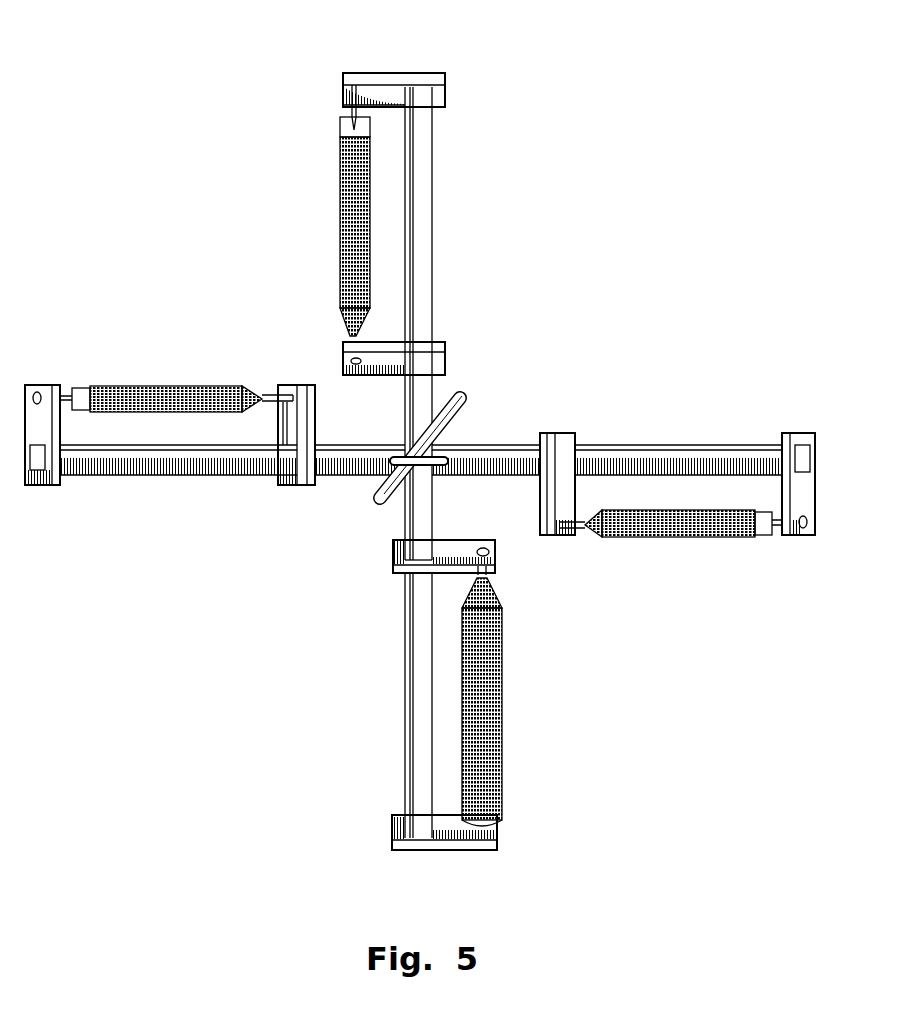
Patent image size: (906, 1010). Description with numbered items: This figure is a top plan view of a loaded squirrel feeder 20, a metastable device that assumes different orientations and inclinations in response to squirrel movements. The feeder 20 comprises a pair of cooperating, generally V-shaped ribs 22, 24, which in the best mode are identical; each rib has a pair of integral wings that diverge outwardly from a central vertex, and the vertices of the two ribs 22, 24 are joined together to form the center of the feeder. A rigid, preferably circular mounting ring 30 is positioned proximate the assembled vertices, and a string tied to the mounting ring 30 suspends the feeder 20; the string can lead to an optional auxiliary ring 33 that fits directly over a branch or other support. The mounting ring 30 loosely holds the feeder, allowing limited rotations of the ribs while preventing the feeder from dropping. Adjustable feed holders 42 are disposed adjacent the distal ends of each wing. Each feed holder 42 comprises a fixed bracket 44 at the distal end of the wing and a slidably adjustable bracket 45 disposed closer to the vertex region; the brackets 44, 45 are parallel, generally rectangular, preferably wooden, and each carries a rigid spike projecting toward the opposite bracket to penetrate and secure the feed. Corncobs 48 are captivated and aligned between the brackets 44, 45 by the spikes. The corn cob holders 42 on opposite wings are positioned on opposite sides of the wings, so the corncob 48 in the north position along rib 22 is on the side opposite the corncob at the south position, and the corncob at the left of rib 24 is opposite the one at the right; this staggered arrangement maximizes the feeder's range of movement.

The squirrel feeder 20 is at (420, 431).
The rib 22 is at (358, 706).
The rib 24 is at (610, 426).
The mounting ring 30 is at (462, 400).
The auxiliary ring 33 is at (392, 462).
The feed holder 42 is at (455, 65).
The fixed bracket 44 is at (392, 88).
The slidably adjustable bracket 45 is at (445, 352).
The corncob 48 is at (343, 207).